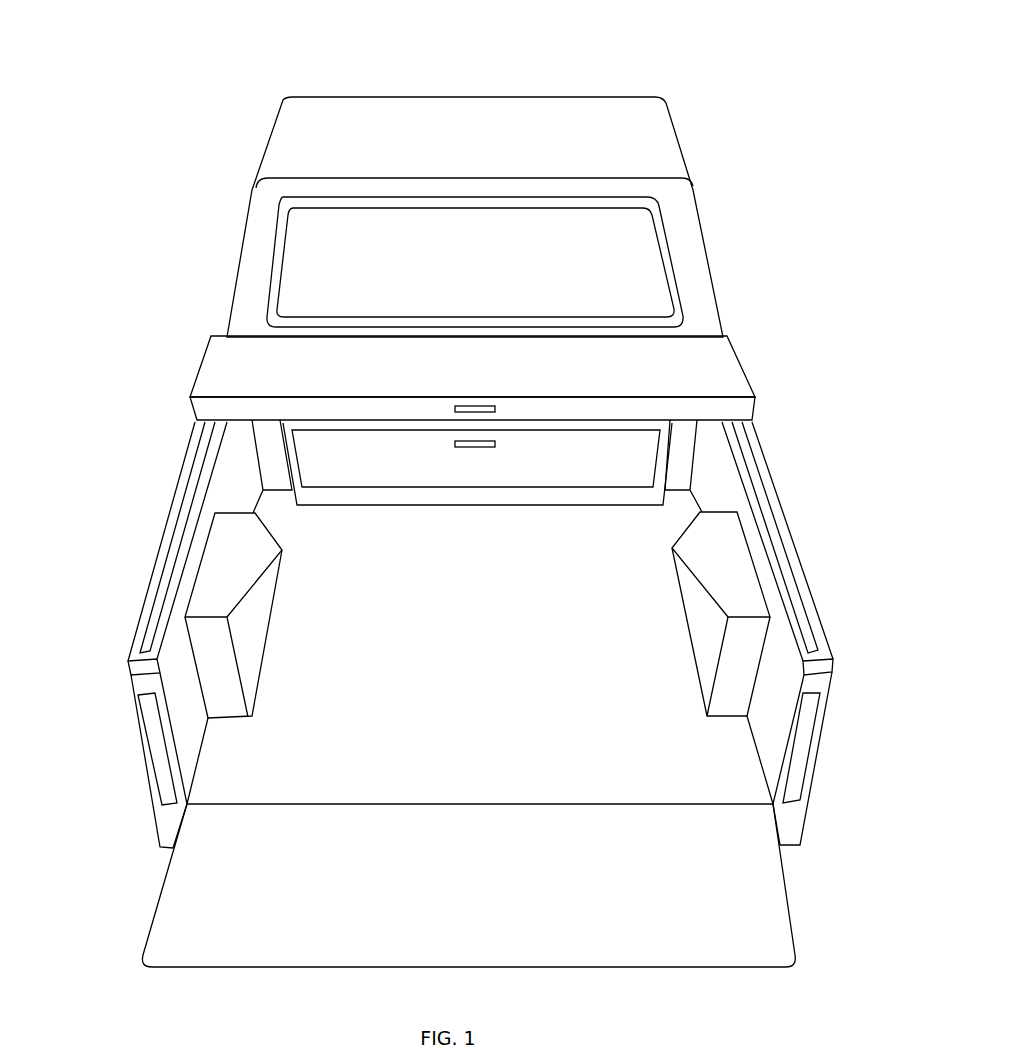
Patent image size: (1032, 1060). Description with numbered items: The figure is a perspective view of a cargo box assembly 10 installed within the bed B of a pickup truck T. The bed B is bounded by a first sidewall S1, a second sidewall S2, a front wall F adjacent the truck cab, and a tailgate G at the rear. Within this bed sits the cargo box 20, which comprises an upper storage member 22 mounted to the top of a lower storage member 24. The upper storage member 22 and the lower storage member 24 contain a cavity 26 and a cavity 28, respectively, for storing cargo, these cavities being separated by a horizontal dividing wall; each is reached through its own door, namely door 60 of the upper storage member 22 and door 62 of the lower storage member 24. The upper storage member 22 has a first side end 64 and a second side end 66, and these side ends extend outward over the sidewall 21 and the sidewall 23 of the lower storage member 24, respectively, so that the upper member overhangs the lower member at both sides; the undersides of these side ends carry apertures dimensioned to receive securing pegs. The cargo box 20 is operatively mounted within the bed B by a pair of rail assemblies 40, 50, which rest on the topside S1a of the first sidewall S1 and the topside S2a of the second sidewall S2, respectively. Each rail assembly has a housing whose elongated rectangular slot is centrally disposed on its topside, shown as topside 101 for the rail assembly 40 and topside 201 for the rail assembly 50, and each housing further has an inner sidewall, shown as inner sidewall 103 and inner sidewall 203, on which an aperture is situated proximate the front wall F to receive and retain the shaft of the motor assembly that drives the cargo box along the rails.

The cargo box assembly 10 is at (131, 260).
The pickup truck T is at (602, 108).
The cargo box 20 is at (698, 347).
The upper storage member 22 is at (202, 357).
The first side end 64 is at (210, 370).
The door 60 is at (202, 387).
The second side end 66 is at (723, 357).
The cavity 26 is at (737, 380).
The front wall F is at (270, 460).
The sidewall 23 is at (737, 443).
The door 62 is at (328, 472).
The sidewall 21 is at (260, 438).
The cavity 28 is at (732, 470).
The lower storage member 24 is at (730, 500).
The topside of first sidewall S1a is at (155, 563).
The topside of housing 101 is at (148, 597).
The inner sidewall of housing 103 is at (175, 638).
The rail assembly 40 is at (143, 672).
The first sidewall S1 is at (155, 798).
The topside of second sidewall S2a is at (797, 545).
The topside of housing 201 is at (800, 570).
The inner sidewall of housing 203 is at (790, 640).
The rail assembly 50 is at (825, 675).
The second sidewall S2 is at (813, 775).
The bed B is at (712, 787).
The tailgate G is at (607, 952).